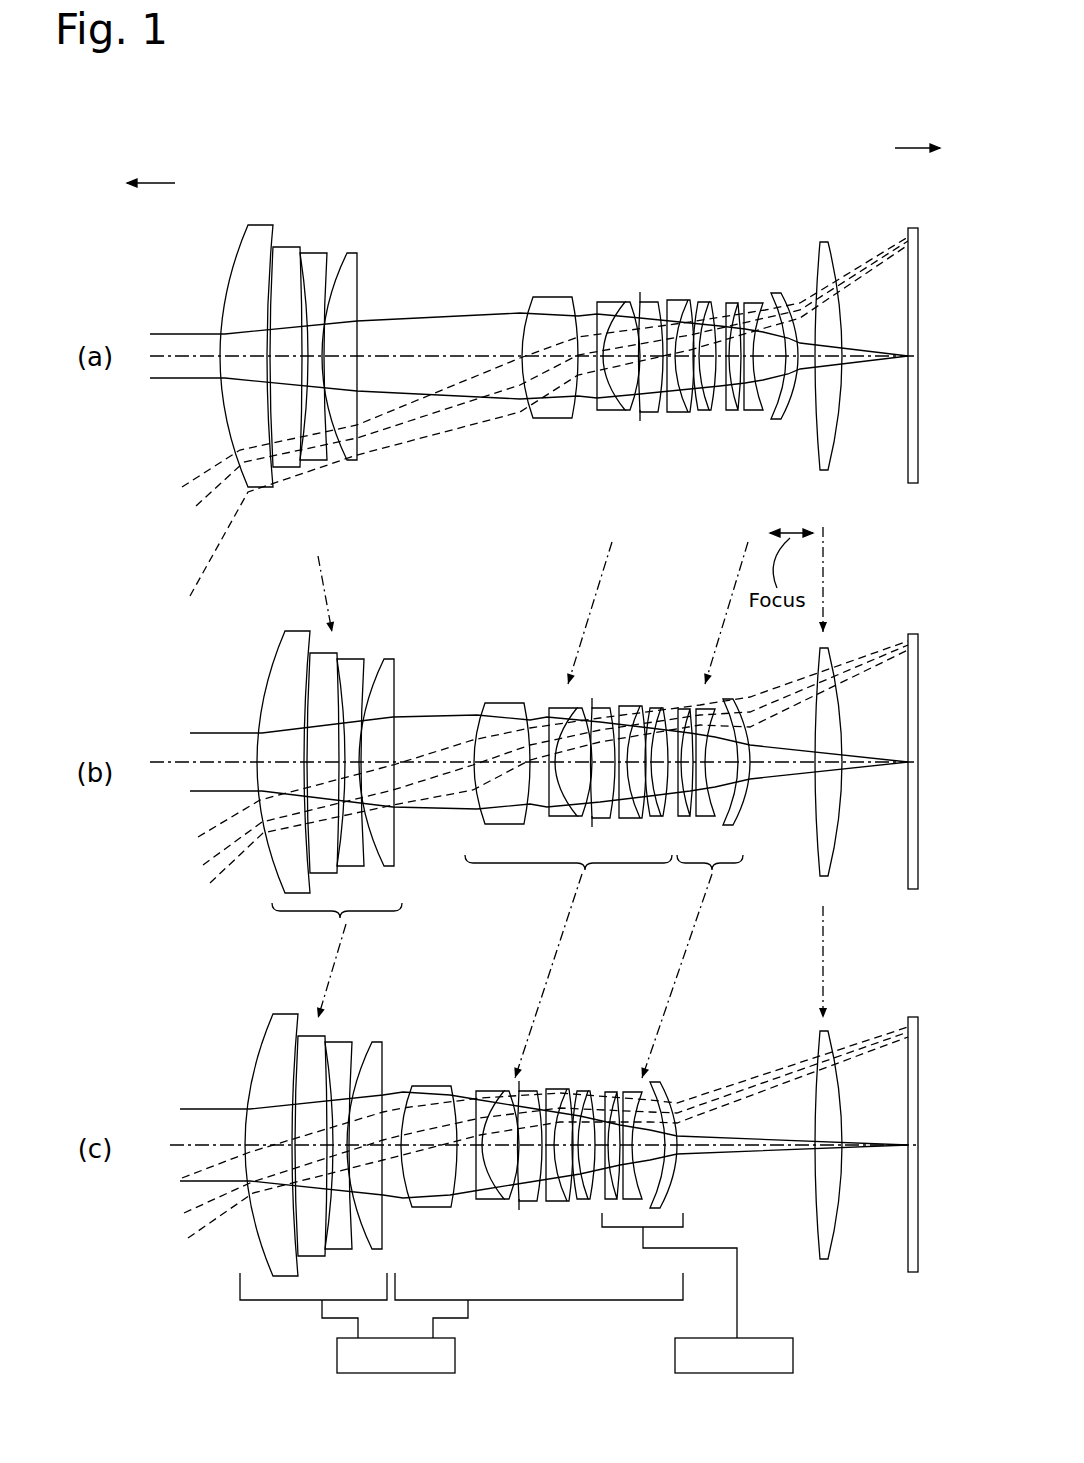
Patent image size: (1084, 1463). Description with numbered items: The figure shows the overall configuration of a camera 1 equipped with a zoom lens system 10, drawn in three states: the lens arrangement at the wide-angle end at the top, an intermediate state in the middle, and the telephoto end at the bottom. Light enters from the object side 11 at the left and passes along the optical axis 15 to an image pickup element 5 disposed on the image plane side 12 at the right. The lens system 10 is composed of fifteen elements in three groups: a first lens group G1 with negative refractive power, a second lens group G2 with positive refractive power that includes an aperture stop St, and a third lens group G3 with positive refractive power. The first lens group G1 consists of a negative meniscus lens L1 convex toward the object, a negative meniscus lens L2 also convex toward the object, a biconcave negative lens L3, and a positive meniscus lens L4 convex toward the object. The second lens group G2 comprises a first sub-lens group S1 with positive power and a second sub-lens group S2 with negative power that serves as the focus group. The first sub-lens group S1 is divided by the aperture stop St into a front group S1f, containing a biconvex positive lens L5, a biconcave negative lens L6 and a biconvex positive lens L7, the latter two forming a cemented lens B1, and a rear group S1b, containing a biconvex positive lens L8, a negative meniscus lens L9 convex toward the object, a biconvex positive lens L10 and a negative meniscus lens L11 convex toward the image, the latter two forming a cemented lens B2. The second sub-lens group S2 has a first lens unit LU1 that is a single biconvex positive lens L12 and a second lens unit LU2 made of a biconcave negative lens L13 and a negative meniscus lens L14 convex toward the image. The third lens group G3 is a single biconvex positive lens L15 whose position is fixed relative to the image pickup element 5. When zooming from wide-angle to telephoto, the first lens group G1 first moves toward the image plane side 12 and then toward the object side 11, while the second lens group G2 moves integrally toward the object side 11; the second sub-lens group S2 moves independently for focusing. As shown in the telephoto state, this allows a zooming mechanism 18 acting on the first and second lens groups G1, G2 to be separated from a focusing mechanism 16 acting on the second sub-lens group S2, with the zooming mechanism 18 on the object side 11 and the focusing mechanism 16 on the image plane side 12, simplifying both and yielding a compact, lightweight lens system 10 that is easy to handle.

The camera 1 is at (712, 137).
The zoom lens system 10 is at (583, 160).
The object side 11 is at (152, 183).
The image plane side 12 is at (900, 148).
The optical axis 15 is at (200, 352).
The image pickup element 5 is at (913, 228).
The focusing mechanism 16 is at (787, 1357).
The zooming mechanism 18 is at (447, 1357).
The first lens group G1 is at (245, 500).
The second lens group G2 is at (767, 540).
The third lens group G3 is at (813, 478).
The first sub-lens group S1 is at (697, 485).
The second sub-lens group S2 is at (798, 485).
The front group S1f is at (632, 437).
The rear group S1b is at (713, 437).
The first lens unit LU1 is at (723, 437).
The second lens unit LU2 is at (745, 437).
The cemented lens B1 is at (517, 215).
The cemented lens B2 is at (668, 193).
The aperture stop St is at (639, 300).
The meniscus lens L1 is at (258, 232).
The meniscus lens L2 is at (283, 255).
The biconcave negative lens L3 is at (312, 258).
The meniscus lens L4 is at (351, 258).
The biconvex positive lens L5 is at (553, 303).
The biconcave negative lens L6 is at (607, 307).
The biconvex positive lens L7 is at (627, 310).
The biconvex positive lens L8 is at (657, 302).
The negative meniscus lens L9 is at (668, 300).
The biconvex positive lens L10 is at (695, 303).
The negative meniscus lens L11 is at (712, 302).
The biconvex positive lens L12 is at (740, 303).
The biconcave negative lens L13 is at (753, 303).
The negative meniscus lens L14 is at (777, 297).
The biconvex positive lens L15 is at (827, 265).